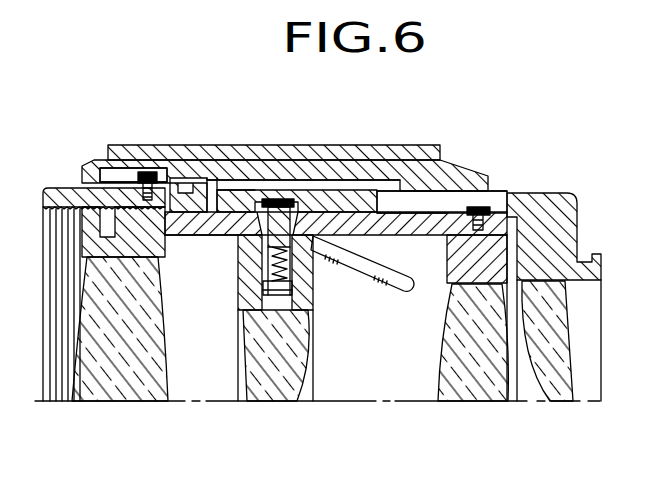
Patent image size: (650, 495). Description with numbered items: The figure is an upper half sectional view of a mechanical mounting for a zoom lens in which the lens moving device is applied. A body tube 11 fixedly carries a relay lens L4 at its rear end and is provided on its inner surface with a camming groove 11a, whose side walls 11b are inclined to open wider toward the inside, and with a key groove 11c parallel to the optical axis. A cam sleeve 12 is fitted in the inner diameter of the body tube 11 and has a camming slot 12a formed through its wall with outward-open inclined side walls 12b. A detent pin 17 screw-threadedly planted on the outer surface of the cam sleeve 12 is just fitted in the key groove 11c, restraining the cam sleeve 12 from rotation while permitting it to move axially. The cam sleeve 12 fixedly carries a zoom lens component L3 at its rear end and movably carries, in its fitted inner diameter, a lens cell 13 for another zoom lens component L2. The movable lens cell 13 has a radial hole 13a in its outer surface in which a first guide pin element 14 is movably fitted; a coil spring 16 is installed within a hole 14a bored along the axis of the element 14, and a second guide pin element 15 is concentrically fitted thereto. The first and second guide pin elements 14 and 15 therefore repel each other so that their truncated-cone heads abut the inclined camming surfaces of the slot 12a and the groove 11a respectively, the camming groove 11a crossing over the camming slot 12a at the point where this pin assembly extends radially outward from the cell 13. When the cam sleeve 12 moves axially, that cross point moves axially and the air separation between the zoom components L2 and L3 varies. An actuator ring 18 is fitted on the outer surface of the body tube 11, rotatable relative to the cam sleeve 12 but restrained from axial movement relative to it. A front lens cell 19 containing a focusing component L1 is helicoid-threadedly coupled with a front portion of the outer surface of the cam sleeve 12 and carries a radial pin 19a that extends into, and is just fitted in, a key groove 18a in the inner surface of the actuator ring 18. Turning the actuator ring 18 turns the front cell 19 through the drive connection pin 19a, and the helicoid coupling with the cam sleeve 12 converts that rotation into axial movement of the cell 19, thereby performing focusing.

The body tube 11 is at (417, 152).
The camming groove 11a is at (305, 202).
The inclined side walls 11b is at (250, 203).
The key groove 11c is at (450, 205).
The cam sleeve 12 is at (366, 218).
The camming slot 12a is at (412, 294).
The inclined side walls 12b is at (233, 226).
The movable lens cell 13 is at (308, 300).
The radial hole 13a is at (312, 338).
The first guide pin element 14 is at (268, 292).
The hole 14a is at (268, 283).
The second guide pin element 15 is at (281, 198).
The coil spring 16 is at (300, 281).
The detent pin 17 is at (501, 194).
The actuator ring 18 is at (207, 152).
The key groove 18a is at (118, 171).
The front lens cell 19 is at (53, 186).
The radial pin 19a is at (148, 172).
The focusing component L1 is at (135, 390).
The zoom lens component L2 is at (268, 393).
The zoom lens component L3 is at (467, 392).
The relay lens L4 is at (563, 394).